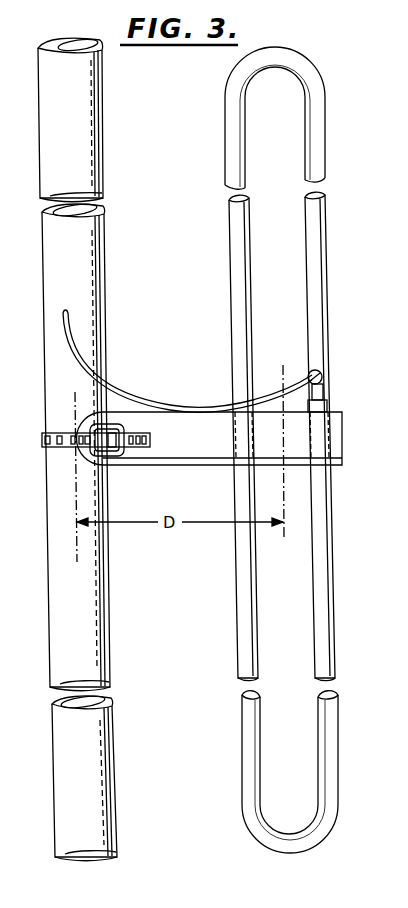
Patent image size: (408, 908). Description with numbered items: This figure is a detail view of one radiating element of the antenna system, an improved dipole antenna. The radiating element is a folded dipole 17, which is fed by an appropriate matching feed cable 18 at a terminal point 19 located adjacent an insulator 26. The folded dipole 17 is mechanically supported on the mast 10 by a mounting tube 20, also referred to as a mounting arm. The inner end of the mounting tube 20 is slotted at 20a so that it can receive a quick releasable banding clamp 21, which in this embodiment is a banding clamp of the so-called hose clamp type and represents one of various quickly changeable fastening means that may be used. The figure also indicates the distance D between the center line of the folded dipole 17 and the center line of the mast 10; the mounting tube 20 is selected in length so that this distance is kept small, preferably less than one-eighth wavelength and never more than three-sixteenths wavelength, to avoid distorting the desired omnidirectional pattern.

The mast 10 is at (63, 580).
The folded dipole 17 is at (320, 582).
The matching feed cable 18 is at (128, 397).
The terminal point 19 is at (321, 373).
The mounting tube 20 is at (201, 443).
The slot 20a is at (145, 447).
The banding clamp 21 is at (65, 445).
The insulator 26 is at (328, 396).